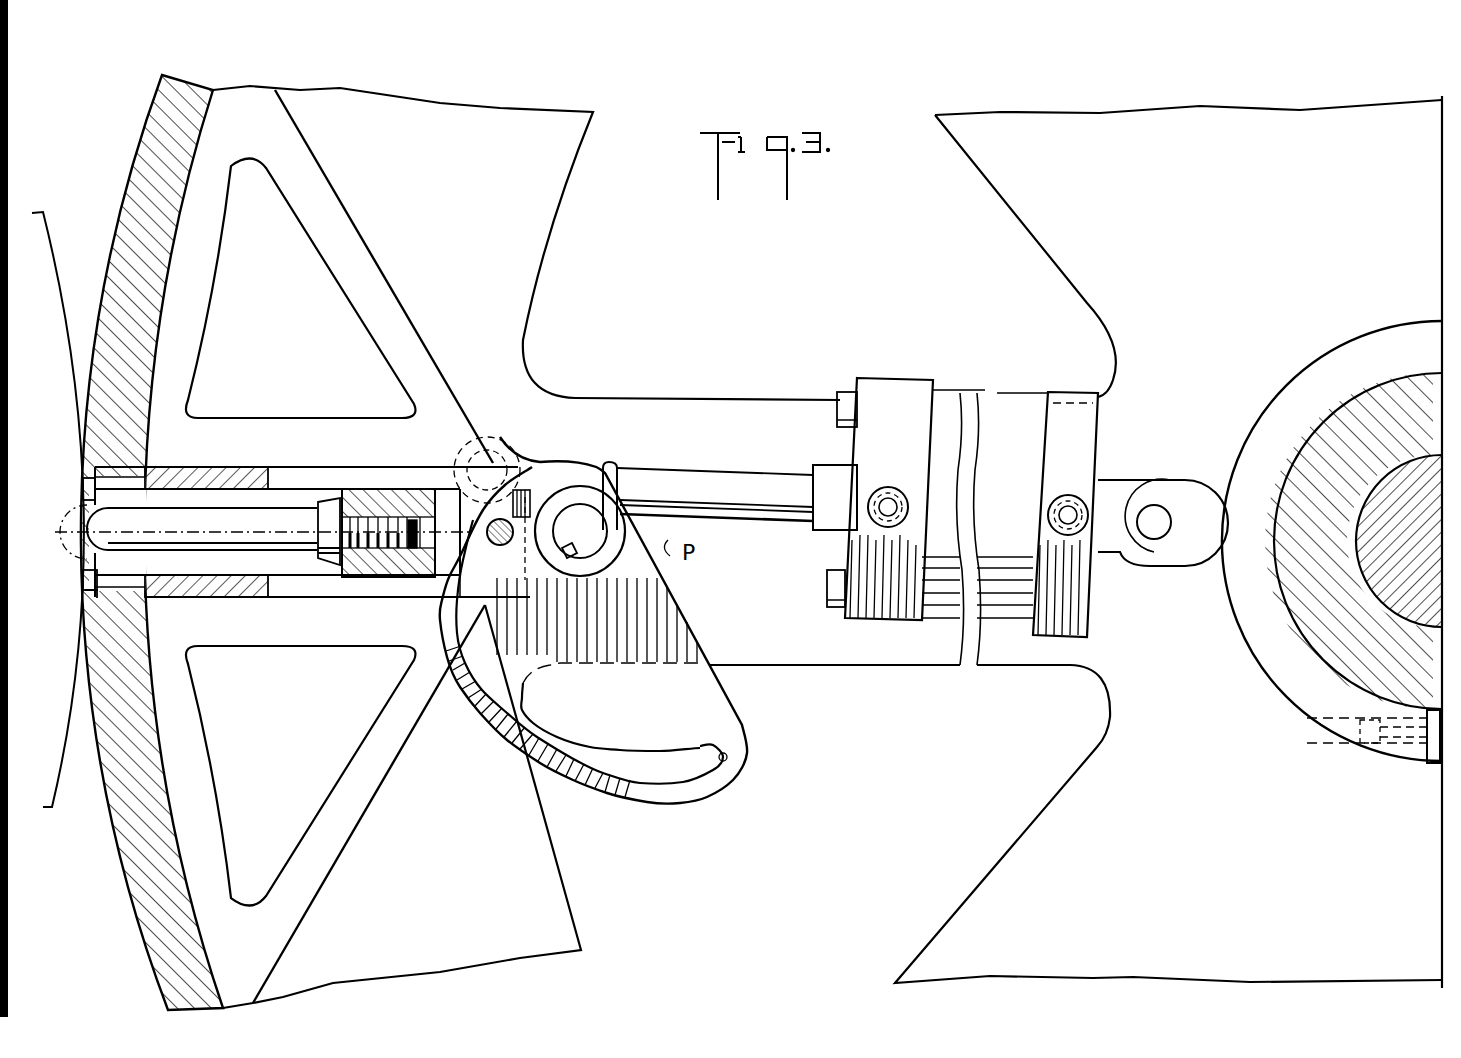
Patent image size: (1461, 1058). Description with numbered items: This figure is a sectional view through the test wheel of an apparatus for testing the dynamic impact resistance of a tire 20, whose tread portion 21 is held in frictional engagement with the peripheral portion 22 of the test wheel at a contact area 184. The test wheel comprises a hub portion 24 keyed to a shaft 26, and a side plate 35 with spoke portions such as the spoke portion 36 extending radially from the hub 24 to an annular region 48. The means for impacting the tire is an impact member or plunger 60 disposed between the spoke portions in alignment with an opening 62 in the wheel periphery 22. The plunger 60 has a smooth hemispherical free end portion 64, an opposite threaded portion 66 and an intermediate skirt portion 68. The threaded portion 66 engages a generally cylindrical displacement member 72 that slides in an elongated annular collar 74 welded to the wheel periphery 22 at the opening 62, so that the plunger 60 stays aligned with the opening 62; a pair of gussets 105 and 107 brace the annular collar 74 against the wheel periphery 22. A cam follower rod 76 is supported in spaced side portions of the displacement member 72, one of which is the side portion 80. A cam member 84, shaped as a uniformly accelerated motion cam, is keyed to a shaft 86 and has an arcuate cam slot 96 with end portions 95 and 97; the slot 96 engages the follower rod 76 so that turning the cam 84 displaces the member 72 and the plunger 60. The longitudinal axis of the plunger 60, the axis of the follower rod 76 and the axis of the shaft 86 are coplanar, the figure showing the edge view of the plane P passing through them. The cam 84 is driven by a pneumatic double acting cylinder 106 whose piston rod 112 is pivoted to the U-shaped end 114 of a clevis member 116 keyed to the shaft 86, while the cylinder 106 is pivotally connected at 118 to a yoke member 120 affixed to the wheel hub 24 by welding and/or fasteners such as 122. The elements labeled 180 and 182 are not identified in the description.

The tire 20 is at (76, 248).
The tread portion 21 is at (65, 302).
The peripheral portion 22 is at (140, 148).
The hub portion 24 is at (1395, 383).
The shaft 26 is at (1388, 594).
The side plate 35 is at (517, 226).
The spoke portion 36 is at (677, 408).
The annular region 48 is at (525, 290).
The plunger 60 is at (222, 545).
The opening 62 is at (103, 487).
The hemispherical free end portion 64 is at (90, 548).
The threaded portion 66 is at (358, 518).
The skirt portion 68 is at (325, 500).
The displacement member 72 is at (390, 490).
The annular collar 74 is at (243, 468).
The cam follower rod 76 is at (494, 545).
The side portion 80 is at (440, 586).
The cam member 84 is at (730, 702).
The shaft 86 is at (577, 510).
The end portion 95 is at (513, 478).
The arcuate cam slot 96 is at (618, 768).
The end portion 97 is at (728, 760).
The gusset 105 is at (341, 205).
The pneumatic double acting cylinder 106 is at (958, 400).
The gusset 107 is at (378, 777).
The piston rod 112 is at (720, 480).
The U-shaped end 114 is at (483, 435).
The clevis member 116 is at (498, 443).
The pivotal connection 118 is at (1154, 505).
The yoke member 120 is at (1263, 402).
The fasteners 122 is at (1337, 740).
The bolt 180 is at (872, 520).
The bolt 182 is at (1055, 508).
The contact area 184 is at (92, 595).